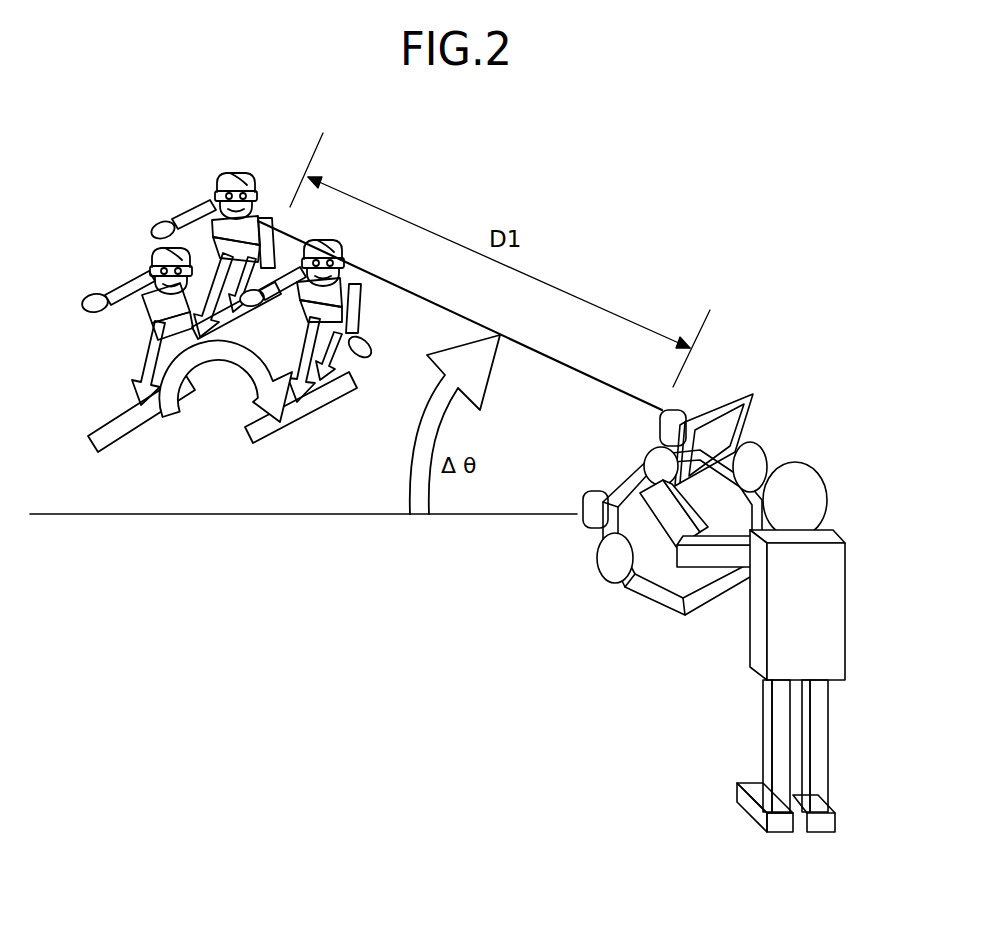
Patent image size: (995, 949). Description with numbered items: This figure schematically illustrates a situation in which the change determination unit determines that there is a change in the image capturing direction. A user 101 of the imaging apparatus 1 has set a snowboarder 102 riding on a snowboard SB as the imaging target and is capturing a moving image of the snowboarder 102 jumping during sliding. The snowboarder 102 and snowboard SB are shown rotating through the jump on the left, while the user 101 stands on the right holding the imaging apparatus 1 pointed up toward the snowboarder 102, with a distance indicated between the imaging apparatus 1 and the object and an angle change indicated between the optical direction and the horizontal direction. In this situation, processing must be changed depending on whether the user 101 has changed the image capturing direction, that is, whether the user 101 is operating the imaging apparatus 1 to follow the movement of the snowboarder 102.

The imaging apparatus 1 is at (745, 392).
The user 101 is at (808, 480).
The snowboarder 102 is at (122, 290).
The snowboard SB is at (102, 433).